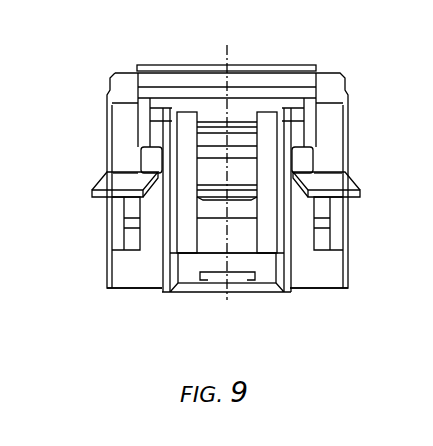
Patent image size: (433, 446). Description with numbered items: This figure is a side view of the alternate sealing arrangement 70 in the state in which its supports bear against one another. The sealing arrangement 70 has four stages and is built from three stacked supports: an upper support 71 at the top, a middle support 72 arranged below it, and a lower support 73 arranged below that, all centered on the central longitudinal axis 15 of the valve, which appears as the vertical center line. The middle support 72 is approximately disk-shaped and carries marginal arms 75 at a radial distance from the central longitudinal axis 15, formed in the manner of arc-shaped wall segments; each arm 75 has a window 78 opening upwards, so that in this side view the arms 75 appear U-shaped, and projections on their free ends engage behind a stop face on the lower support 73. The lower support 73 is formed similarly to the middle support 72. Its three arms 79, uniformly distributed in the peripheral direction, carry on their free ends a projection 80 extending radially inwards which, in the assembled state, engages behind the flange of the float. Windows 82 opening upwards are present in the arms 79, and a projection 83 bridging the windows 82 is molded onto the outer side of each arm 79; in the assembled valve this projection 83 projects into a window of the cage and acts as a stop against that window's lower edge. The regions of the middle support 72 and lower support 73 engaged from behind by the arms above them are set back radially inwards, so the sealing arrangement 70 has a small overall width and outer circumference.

The sealing arrangement 70 is at (429, 322).
The upper support 71 is at (323, 88).
The middle support 72 is at (268, 155).
The lower support 73 is at (348, 220).
The marginal arms 75 is at (180, 142).
The window 78 is at (197, 167).
The arms 79 is at (136, 275).
The projection 80 is at (232, 262).
The windows 82 is at (118, 232).
The projection 83 is at (113, 183).
The central longitudinal axis 15 is at (228, 108).